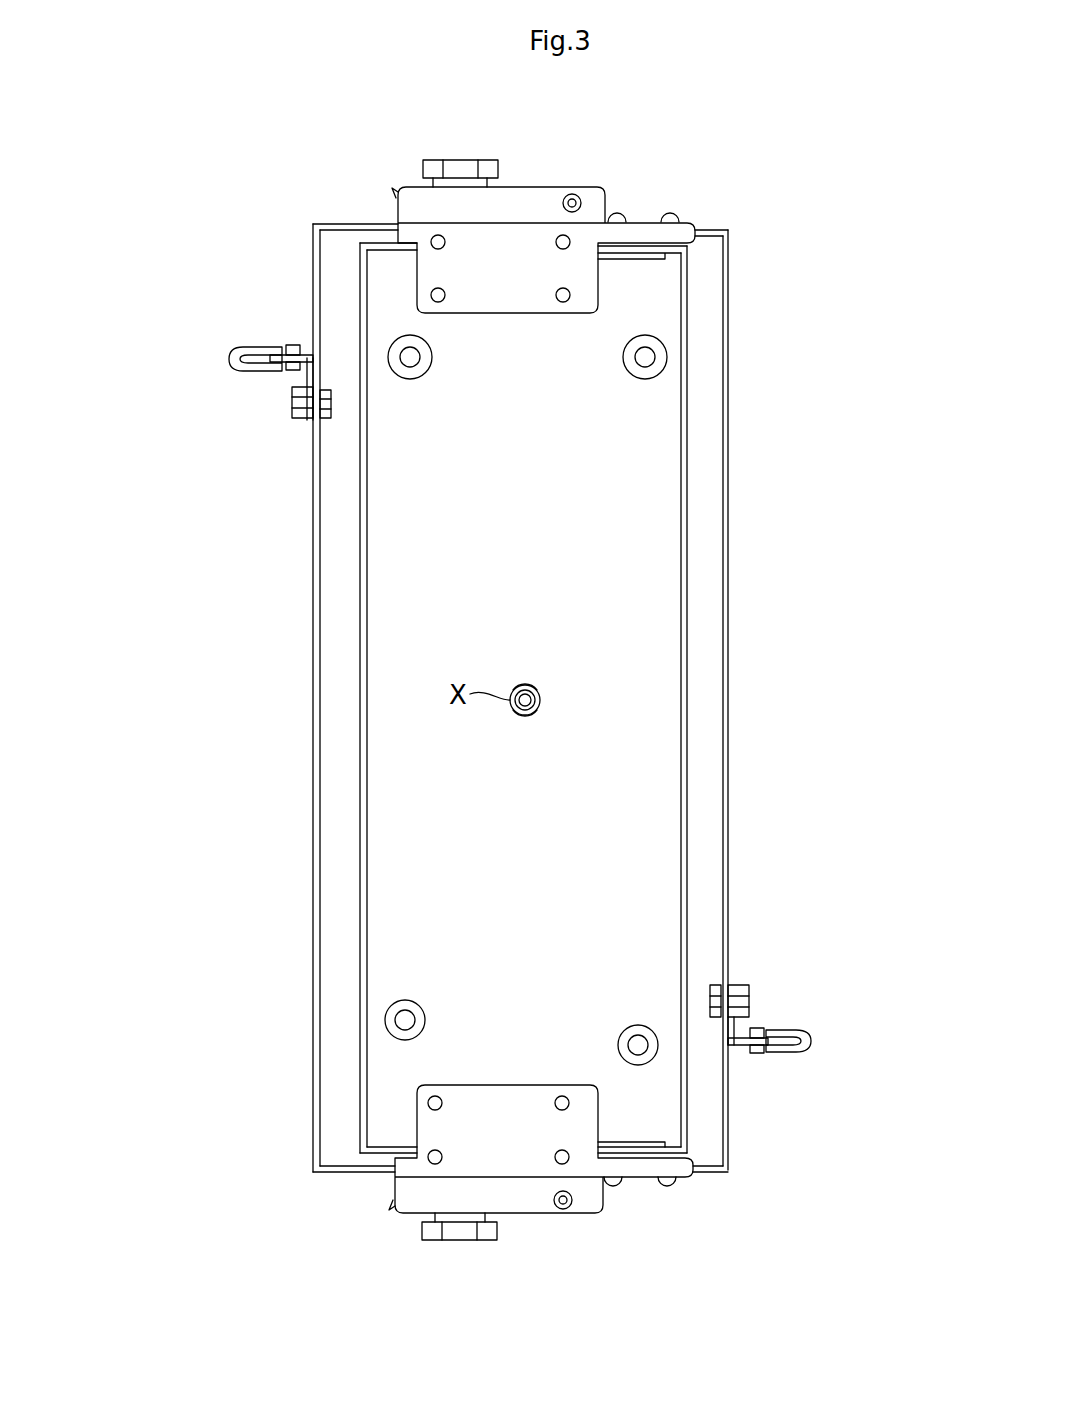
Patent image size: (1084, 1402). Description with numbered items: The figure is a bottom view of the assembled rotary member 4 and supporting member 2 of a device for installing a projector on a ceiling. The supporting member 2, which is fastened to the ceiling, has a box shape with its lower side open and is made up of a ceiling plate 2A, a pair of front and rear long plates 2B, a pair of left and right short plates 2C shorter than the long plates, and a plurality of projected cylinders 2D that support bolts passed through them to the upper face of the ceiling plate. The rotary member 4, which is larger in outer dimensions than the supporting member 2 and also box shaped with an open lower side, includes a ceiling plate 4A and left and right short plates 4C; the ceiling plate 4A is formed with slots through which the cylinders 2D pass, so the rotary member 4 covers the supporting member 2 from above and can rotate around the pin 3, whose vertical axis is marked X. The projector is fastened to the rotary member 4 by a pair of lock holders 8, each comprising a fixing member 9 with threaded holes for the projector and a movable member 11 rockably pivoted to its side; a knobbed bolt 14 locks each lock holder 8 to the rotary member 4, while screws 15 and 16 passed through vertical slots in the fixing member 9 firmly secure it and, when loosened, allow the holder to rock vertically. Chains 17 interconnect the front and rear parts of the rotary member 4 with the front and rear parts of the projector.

The supporting member 2 is at (579, 698).
The ceiling plate 2A is at (665, 890).
The front and rear long plates 2B is at (370, 549).
The left and right short plates 2C is at (636, 256).
The projected cylinders 2D is at (418, 378).
The pin 3 is at (530, 714).
The rotary member 4 is at (555, 655).
The ceiling plate 4A is at (708, 800).
The left and right short plates 4C is at (355, 222).
The lock holder 8 is at (565, 172).
The fixing member 9 is at (530, 195).
The movable member 11 is at (396, 188).
The knobbed bolt 14 is at (460, 165).
The screw 15 is at (617, 213).
The screw 16 is at (670, 213).
The chains 17 is at (250, 375).